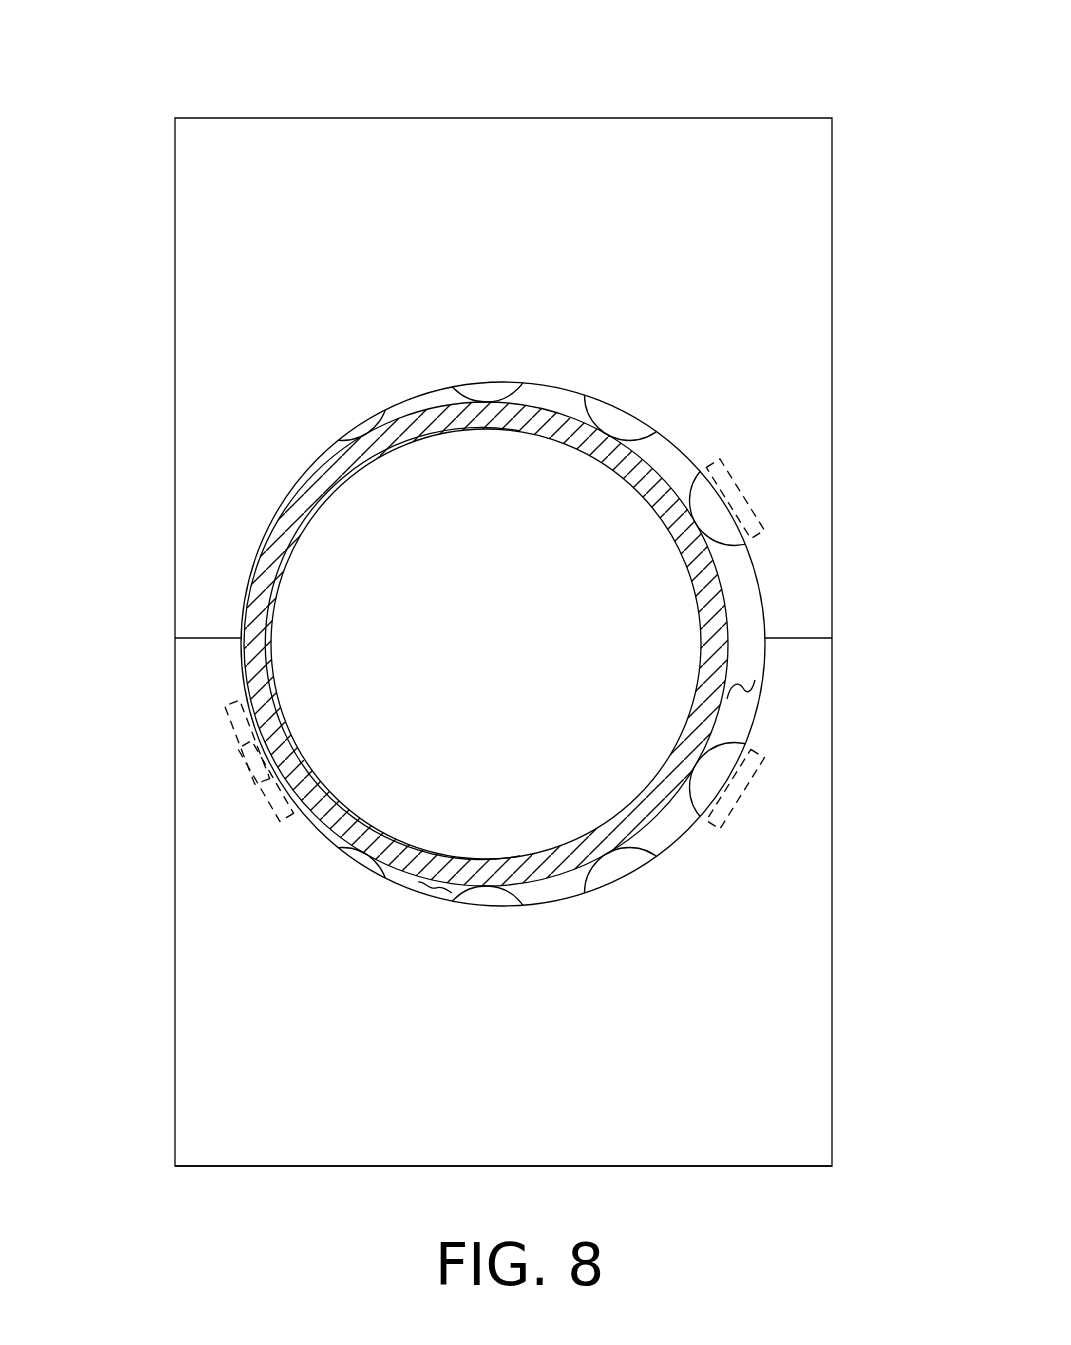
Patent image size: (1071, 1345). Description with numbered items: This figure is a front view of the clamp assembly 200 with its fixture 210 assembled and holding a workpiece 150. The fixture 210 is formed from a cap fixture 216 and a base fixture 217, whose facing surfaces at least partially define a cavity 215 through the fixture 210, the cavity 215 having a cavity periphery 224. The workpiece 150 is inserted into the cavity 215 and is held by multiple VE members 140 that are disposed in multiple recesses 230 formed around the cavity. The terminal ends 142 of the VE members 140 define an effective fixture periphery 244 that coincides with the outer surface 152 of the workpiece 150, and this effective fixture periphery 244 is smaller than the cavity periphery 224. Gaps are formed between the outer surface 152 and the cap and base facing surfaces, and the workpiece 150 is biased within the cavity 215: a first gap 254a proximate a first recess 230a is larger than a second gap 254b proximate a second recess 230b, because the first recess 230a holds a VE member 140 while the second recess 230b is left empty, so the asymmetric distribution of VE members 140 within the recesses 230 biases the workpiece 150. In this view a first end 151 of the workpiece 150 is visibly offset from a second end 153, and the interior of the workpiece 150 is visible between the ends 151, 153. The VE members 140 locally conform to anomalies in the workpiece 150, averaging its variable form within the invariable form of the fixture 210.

The clamp assembly 200 is at (158, 72).
The fixture 210 is at (155, 716).
The cap fixture 216 is at (727, 148).
The base fixture 217 is at (760, 1153).
The cavity periphery 224 is at (676, 440).
The workpiece 150 is at (330, 472).
The first end 151 is at (385, 437).
The outer surface 152 is at (406, 412).
The second end 153 is at (350, 567).
The cavity 215 is at (522, 686).
The VE members 140 is at (508, 385).
The terminal ends 142 is at (603, 428).
The effective fixture periphery 244 is at (700, 466).
The recesses 230 is at (760, 512).
The first recess 230a is at (760, 797).
The second recess 230b is at (248, 789).
The first gap 254a is at (735, 688).
The second gap 254b is at (432, 893).